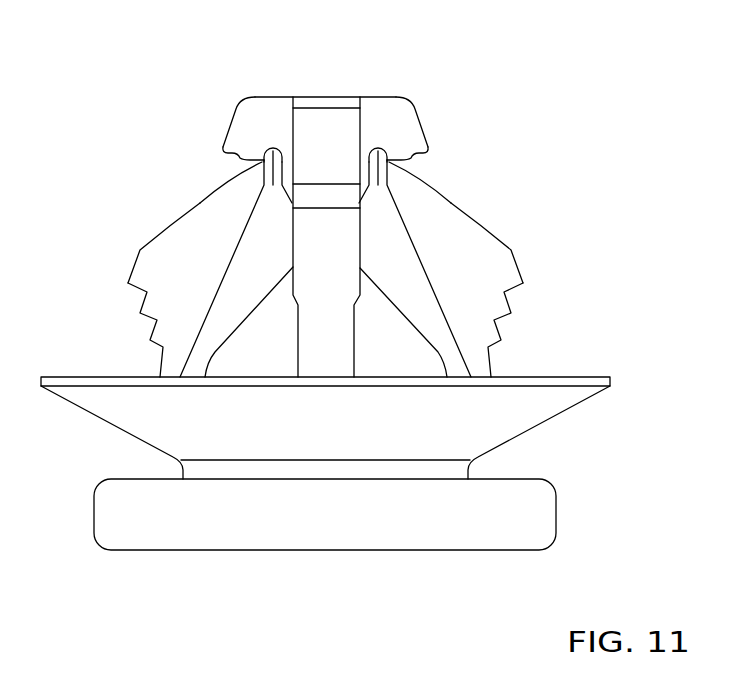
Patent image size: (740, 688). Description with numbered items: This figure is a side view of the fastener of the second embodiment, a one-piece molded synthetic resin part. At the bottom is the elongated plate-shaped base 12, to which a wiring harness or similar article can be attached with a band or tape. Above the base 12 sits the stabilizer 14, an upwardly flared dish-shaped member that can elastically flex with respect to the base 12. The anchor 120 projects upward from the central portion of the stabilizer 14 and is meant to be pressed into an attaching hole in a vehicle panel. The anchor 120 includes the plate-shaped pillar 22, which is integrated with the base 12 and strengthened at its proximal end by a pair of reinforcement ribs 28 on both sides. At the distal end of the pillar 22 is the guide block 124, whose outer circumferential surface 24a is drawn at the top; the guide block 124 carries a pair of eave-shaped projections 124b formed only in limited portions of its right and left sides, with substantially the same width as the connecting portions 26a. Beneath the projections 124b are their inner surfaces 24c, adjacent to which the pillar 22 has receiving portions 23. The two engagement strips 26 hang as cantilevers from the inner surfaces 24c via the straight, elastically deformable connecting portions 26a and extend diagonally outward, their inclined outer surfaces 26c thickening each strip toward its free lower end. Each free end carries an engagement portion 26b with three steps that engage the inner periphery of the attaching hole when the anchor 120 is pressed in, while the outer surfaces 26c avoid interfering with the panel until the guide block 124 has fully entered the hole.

The anchor 120 is at (208, 100).
The guide block 124 is at (345, 97).
The eave-shaped projections 124b is at (260, 117).
The outer circumferential surface 24a is at (424, 116).
The inner surfaces 24c is at (256, 163).
The pillar 22 is at (334, 245).
The receiving portions 23 is at (290, 180).
The engagement strips 26 is at (170, 272).
The connecting portions 26a is at (245, 172).
The engagement portion 26b is at (157, 320).
The inclined outer surfaces 26c is at (186, 205).
The reinforcement ribs 28 is at (255, 348).
The stabilizer 14 is at (535, 407).
The base 12 is at (250, 528).